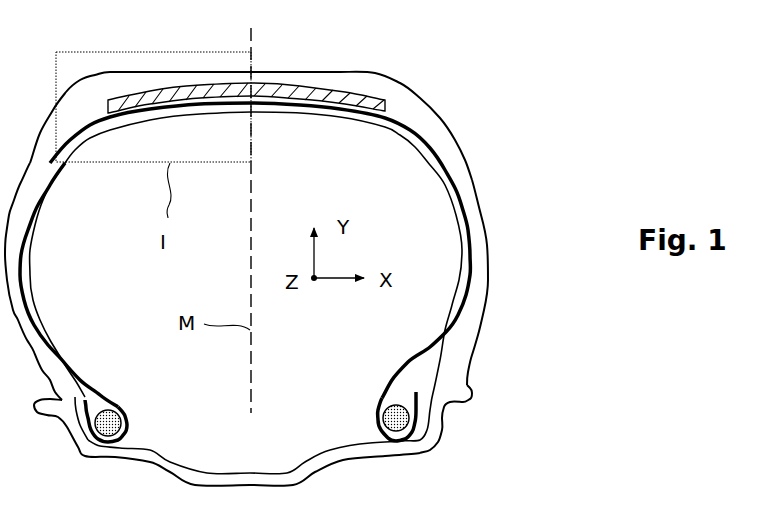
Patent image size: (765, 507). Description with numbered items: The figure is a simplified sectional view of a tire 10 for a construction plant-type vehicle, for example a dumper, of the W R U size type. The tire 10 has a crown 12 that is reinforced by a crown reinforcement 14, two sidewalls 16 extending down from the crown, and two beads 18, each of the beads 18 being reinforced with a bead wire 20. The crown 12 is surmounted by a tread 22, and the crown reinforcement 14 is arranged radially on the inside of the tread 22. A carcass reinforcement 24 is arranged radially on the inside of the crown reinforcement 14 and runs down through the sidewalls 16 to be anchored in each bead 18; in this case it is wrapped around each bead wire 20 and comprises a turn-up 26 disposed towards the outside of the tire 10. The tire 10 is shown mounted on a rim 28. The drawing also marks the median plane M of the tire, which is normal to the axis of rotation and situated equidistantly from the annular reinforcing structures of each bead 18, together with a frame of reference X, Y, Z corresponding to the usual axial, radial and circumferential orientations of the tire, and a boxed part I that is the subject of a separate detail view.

The tire 10 is at (538, 152).
The crown 12 is at (416, 95).
The crown reinforcement 14 is at (342, 88).
The sidewall 16 is at (505, 250).
The bead 18 is at (371, 387).
The bead wire 20 is at (381, 418).
The tread 22 is at (148, 66).
The carcass reinforcement 24 is at (471, 313).
The turn-up 26 is at (424, 391).
The rim 28 is at (449, 417).